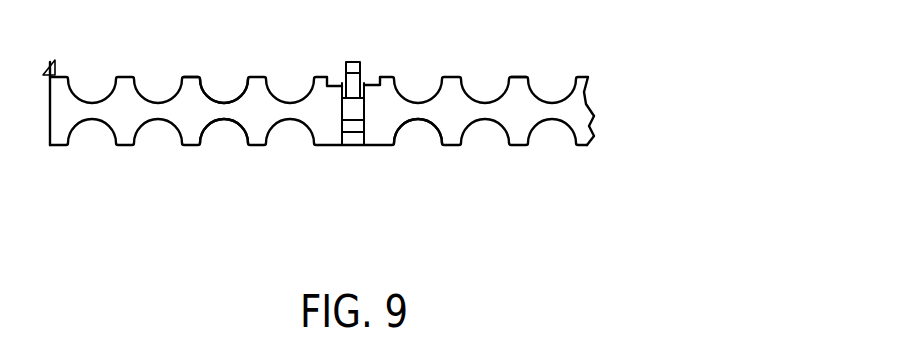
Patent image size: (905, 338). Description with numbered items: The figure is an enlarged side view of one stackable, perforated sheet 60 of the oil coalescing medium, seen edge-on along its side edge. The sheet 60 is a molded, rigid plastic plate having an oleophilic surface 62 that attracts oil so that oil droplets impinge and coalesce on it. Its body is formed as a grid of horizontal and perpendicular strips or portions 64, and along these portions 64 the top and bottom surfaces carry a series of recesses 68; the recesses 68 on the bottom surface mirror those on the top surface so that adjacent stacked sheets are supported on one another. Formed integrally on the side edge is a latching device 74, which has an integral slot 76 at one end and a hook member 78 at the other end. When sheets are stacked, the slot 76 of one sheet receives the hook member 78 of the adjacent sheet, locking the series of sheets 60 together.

The stackable perforated sheet 60 is at (318, 114).
The oleophilic surface 62 is at (497, 112).
The horizontal and perpendicular strips 64 is at (193, 76).
The recesses 68 is at (218, 102).
The latching device 74 is at (364, 84).
The integral slot 76 is at (355, 123).
The hook member 78 is at (357, 97).